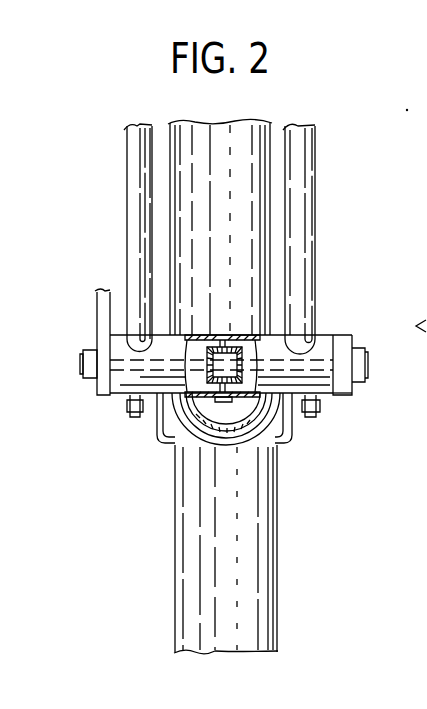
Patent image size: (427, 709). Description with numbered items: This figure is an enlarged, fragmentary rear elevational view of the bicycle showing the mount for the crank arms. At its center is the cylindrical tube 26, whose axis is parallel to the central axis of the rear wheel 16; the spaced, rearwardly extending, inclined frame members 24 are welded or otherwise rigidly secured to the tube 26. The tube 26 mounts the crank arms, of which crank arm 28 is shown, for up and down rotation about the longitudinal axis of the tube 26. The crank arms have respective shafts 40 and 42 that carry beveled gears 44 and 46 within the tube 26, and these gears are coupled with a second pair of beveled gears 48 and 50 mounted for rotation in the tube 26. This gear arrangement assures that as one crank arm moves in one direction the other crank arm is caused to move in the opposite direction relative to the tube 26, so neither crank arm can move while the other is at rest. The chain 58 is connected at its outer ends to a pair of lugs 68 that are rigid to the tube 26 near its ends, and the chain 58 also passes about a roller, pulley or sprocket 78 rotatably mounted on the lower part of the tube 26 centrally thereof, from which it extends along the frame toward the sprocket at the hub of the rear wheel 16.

The rear wheel 16 is at (278, 575).
The inclined frame members 24 is at (128, 160).
The cylindrical tube 26 is at (330, 335).
The crank arm 28 is at (97, 315).
The shaft 40 is at (123, 365).
The shaft 42 is at (320, 368).
The beveled gear 44 is at (195, 340).
The beveled gear 46 is at (260, 340).
The beveled gear 48 is at (232, 347).
The beveled gear 50 is at (262, 455).
The chain 58 is at (215, 442).
The lugs 68 is at (135, 418).
The roller, pulley or sprocket 78 is at (233, 442).